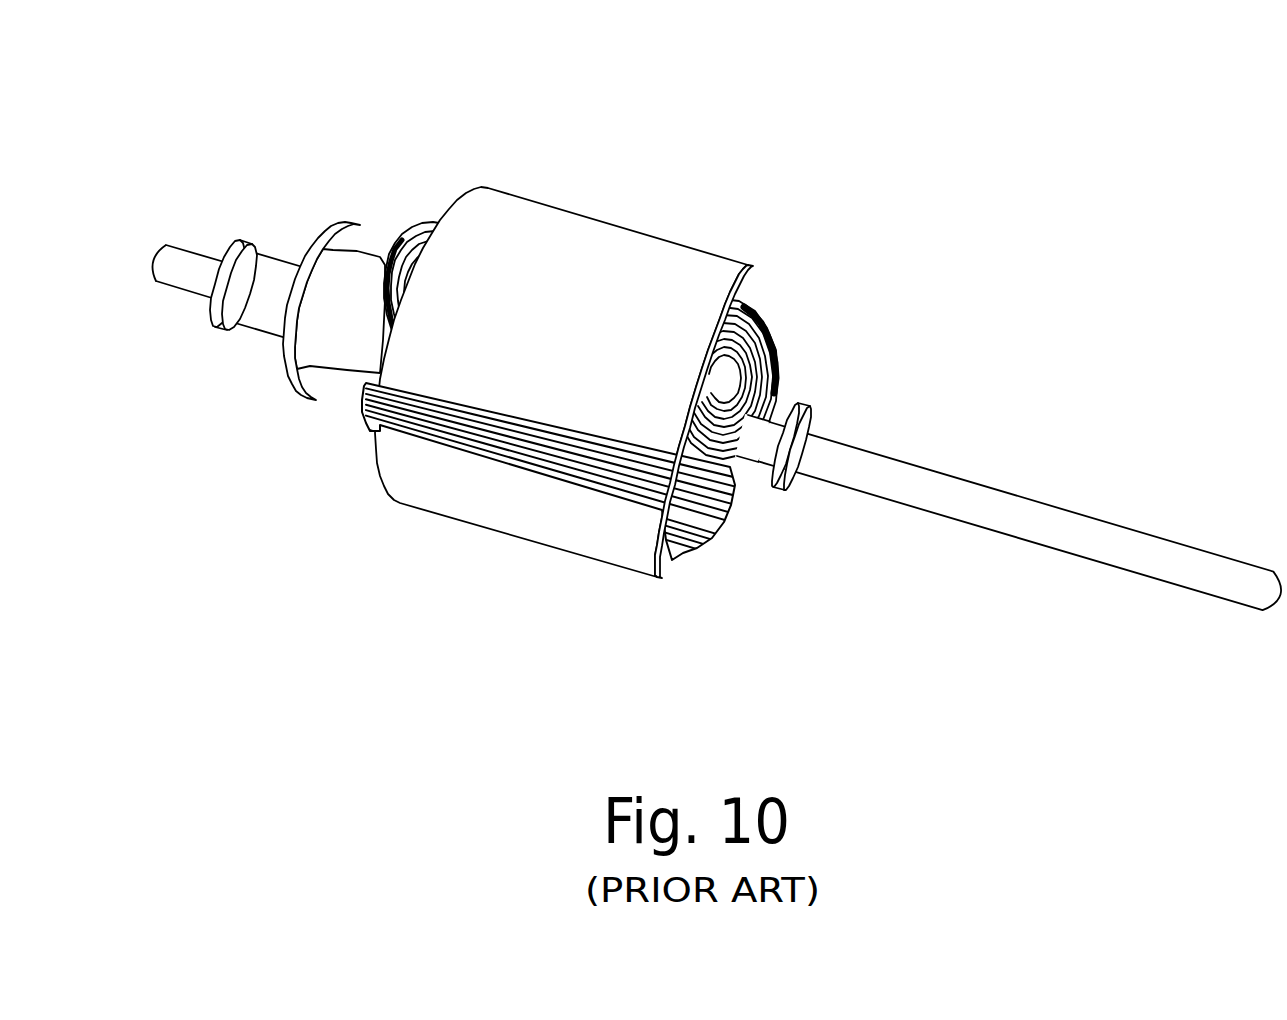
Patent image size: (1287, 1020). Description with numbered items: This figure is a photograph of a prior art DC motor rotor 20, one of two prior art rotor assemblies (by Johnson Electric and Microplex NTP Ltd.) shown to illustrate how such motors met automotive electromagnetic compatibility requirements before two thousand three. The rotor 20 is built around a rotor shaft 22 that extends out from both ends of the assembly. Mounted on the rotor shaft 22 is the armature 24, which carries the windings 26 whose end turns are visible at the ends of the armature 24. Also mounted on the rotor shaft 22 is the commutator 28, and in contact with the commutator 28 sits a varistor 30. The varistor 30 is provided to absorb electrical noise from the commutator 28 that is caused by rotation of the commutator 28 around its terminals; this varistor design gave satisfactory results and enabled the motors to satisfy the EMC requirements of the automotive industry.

The rotor 20 is at (708, 329).
The rotor shaft 22 is at (980, 497).
The armature 24 is at (540, 234).
The windings 26 is at (775, 338).
The commutator 28 is at (364, 266).
The varistor 30 is at (323, 247).